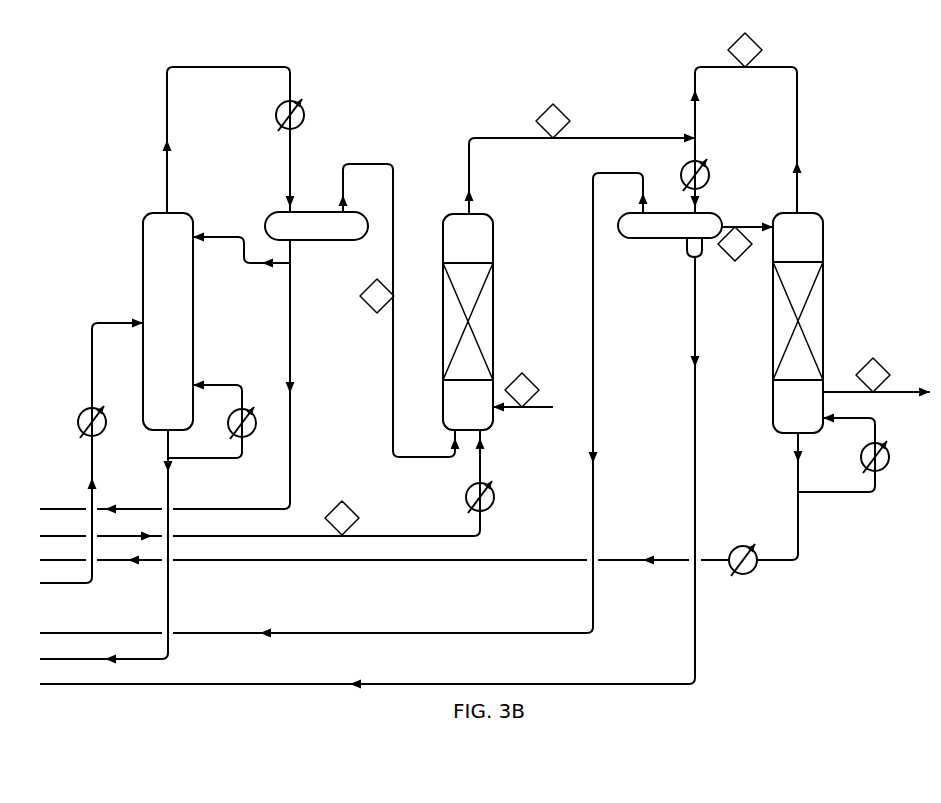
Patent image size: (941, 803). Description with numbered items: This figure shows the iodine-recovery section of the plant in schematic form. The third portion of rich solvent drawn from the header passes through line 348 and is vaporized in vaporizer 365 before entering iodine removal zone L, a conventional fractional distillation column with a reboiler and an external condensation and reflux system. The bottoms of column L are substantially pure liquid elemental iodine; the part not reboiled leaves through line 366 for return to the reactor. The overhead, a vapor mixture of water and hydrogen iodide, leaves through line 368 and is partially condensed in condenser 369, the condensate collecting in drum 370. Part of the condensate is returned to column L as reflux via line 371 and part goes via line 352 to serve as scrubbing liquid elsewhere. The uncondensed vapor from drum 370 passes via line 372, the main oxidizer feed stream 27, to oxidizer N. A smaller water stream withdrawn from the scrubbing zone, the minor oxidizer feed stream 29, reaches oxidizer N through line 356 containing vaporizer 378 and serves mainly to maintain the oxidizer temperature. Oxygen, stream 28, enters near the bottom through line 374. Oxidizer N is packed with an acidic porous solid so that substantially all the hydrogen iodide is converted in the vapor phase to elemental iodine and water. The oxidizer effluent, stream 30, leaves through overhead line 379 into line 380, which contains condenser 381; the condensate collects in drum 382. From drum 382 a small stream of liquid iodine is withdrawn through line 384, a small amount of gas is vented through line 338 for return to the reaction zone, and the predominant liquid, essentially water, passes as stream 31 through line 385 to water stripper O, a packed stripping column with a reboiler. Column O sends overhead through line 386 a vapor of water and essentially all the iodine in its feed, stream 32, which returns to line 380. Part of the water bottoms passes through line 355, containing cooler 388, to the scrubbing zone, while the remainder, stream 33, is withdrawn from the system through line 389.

The iodine removal zone L is at (199, 335).
The oxidizer N is at (493, 318).
The water stripper O is at (823, 319).
The overhead line 368 is at (167, 122).
The condenser 369 is at (304, 120).
The drum 370 is at (300, 240).
The reflux line 371 is at (258, 265).
The line 352 is at (289, 334).
The vaporizer 365 is at (97, 436).
The line 348 is at (83, 582).
The line 366 is at (170, 487).
The line 356 is at (83, 535).
The vaporizer 378 is at (492, 508).
The line 355 is at (83, 559).
The cooler 388 is at (755, 569).
The line 338 is at (83, 632).
The line 384 is at (83, 683).
The line 372 is at (393, 381).
The line 374 is at (513, 407).
The overhead line 379 is at (469, 177).
The line 380 is at (695, 131).
The line 386 is at (797, 131).
The condenser 381 is at (709, 181).
The drum 382 is at (670, 239).
The line 385 is at (762, 226).
The line 389 is at (855, 392).
The main oxidizer feed stream 27 is at (377, 296).
The oxygen stream 28 is at (522, 390).
The minor oxidizer feed stream 29 is at (342, 518).
The oxidizer effluent stream 30 is at (553, 121).
The water cleanup column charge stream 31 is at (735, 244).
The water cleanup column overhead stream 32 is at (745, 50).
The waste water stream 33 is at (873, 375).